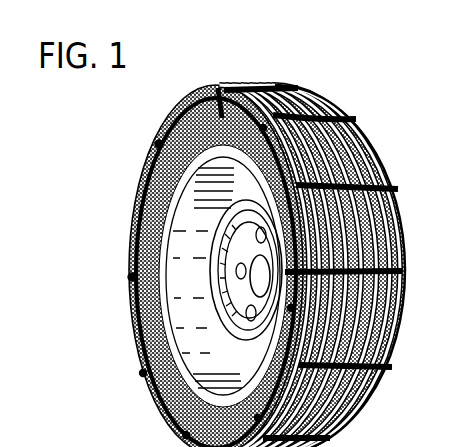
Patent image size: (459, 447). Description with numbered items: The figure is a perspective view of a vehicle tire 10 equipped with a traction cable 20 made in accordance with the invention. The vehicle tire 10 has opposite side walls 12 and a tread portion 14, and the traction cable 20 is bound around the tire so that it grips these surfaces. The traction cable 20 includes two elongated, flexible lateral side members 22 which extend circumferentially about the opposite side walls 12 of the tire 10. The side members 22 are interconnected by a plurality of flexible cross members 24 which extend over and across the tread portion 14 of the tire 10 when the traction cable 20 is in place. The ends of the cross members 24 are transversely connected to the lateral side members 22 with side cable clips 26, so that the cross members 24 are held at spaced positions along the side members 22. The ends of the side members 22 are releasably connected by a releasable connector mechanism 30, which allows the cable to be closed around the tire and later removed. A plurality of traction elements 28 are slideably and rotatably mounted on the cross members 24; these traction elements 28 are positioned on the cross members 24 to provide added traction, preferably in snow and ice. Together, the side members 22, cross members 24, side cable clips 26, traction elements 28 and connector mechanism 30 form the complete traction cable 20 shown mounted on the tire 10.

The vehicle tire 10 is at (123, 347).
The side walls 12 is at (121, 308).
The tread portion 14 is at (350, 207).
The traction cable 20 is at (114, 266).
The lateral side members 22 is at (127, 213).
The cross members 24 is at (208, 83).
The side cable clips 26 is at (182, 163).
The traction elements 28 is at (268, 80).
The releasable connector mechanism 30 is at (148, 135).